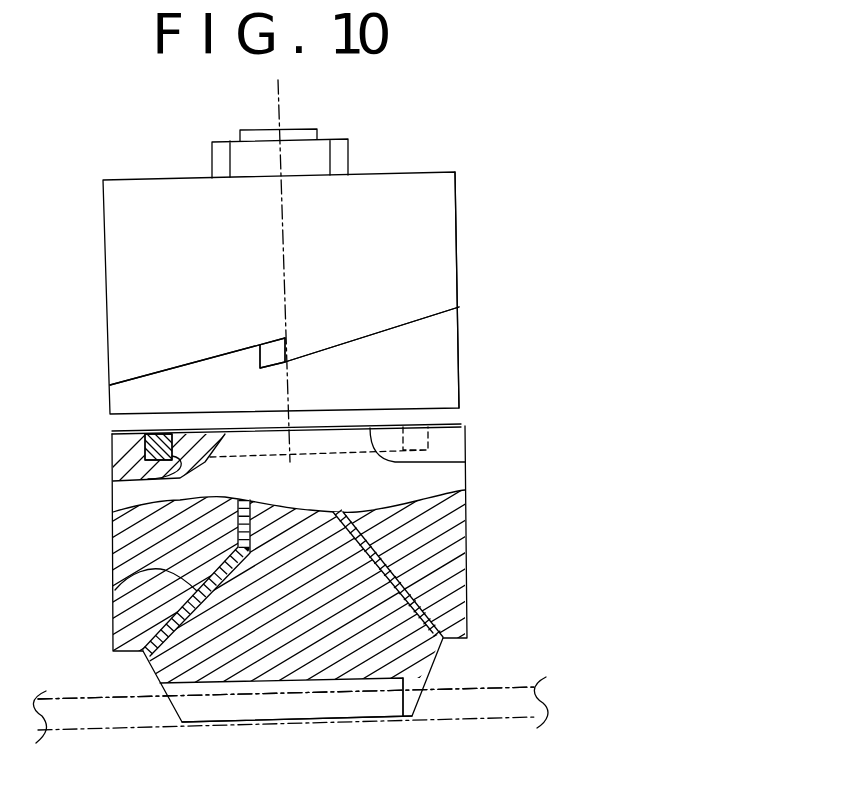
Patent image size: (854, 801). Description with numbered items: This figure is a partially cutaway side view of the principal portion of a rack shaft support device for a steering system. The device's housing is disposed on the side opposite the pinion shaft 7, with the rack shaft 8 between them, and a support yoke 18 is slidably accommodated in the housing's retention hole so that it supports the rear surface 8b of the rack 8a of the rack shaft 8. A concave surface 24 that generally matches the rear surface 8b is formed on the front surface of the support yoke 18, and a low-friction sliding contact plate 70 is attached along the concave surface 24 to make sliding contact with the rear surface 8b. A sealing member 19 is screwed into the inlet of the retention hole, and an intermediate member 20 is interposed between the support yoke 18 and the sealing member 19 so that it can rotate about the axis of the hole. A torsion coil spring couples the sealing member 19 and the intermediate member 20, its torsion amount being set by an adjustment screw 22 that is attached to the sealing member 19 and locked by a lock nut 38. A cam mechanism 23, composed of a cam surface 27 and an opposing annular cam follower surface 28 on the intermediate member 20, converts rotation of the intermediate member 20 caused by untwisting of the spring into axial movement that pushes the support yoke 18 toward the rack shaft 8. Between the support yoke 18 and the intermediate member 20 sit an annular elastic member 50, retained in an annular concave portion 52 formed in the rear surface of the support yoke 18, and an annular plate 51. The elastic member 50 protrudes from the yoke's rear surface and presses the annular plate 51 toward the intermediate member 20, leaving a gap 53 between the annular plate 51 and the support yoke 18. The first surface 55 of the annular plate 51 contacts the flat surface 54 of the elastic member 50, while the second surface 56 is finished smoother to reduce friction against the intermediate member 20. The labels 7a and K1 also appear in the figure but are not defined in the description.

The pinion shaft 7 is at (517, 684).
The recording surface of medium 7a is at (66, 696).
The rack shaft 8 is at (436, 669).
The rack 8a is at (297, 723).
The rear surface of the rack 8b is at (375, 578).
The support yoke 18 is at (470, 448).
The sealing member 19 is at (459, 230).
The intermediate member 20 is at (462, 363).
The adjustment screw 22 is at (302, 128).
The cam mechanism 23 is at (516, 256).
The concave surface 24 is at (398, 704).
The cam surface 27 is at (140, 388).
The cam follower surface 28 is at (137, 380).
The lock nut 38 is at (212, 160).
The annular elastic member 50 is at (110, 472).
The annular plate 51 is at (108, 420).
The annular concave portion 52 is at (148, 472).
The gap 53 is at (110, 437).
The flat surface 54 is at (165, 433).
The first surface 55 is at (440, 466).
The second surface 56 is at (383, 407).
The sliding contact plate 70 is at (113, 587).
The axis K1 is at (274, 100).